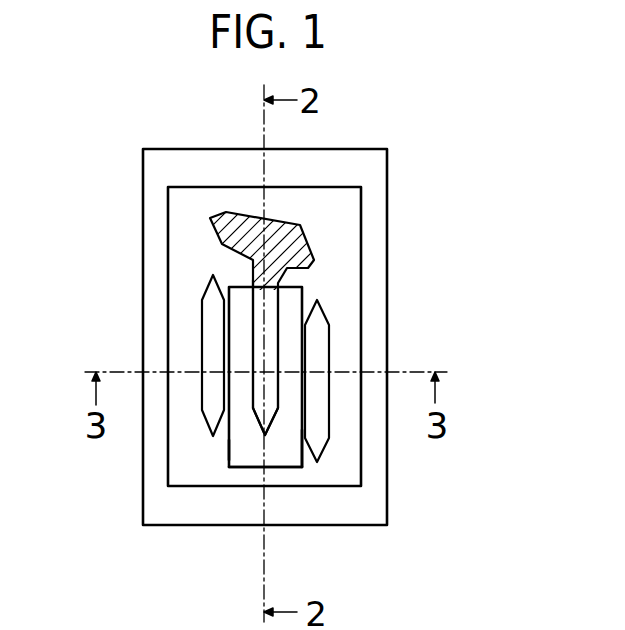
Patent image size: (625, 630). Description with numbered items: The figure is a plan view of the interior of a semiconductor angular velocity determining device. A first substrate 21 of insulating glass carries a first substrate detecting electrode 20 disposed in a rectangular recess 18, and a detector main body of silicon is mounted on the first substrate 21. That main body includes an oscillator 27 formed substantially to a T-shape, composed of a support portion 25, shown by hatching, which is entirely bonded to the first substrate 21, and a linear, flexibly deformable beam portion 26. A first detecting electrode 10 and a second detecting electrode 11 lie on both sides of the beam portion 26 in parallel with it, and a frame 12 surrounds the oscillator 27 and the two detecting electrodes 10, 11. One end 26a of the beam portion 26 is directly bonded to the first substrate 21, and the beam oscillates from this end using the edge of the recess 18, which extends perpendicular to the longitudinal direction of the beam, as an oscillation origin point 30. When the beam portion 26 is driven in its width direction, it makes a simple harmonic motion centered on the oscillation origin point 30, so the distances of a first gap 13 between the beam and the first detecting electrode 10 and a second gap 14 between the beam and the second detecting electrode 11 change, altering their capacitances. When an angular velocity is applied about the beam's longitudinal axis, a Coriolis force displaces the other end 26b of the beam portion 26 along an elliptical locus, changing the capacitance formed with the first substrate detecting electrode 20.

The first detecting electrode 10 is at (200, 407).
The second detecting electrode 11 is at (320, 415).
The frame 12 is at (380, 505).
The first gap 13 is at (231, 447).
The second gap 14 is at (288, 440).
The rectangular recess 18 is at (254, 418).
The first substrate detecting electrode 20 is at (253, 462).
The first substrate 21 is at (378, 212).
The support portion 25 is at (290, 225).
The beam portion 26 is at (281, 308).
The one end of the beam portion 26a is at (252, 270).
The other end of the beam portion 26b is at (272, 410).
The oscillator 27 is at (270, 428).
The oscillation origin point 30 is at (253, 285).